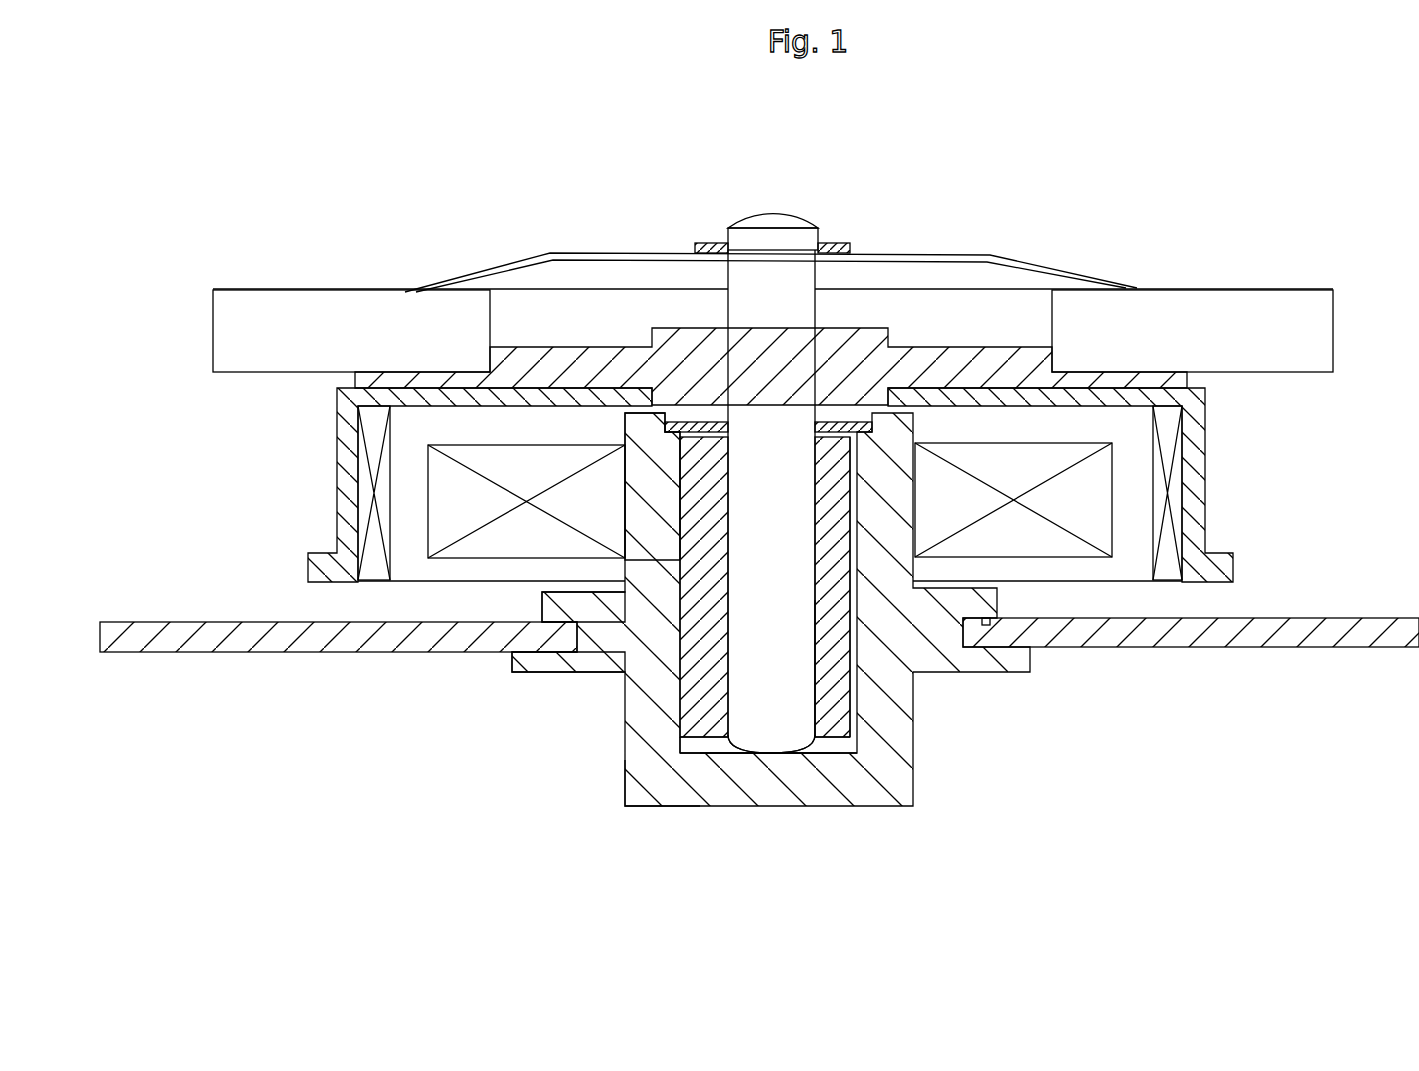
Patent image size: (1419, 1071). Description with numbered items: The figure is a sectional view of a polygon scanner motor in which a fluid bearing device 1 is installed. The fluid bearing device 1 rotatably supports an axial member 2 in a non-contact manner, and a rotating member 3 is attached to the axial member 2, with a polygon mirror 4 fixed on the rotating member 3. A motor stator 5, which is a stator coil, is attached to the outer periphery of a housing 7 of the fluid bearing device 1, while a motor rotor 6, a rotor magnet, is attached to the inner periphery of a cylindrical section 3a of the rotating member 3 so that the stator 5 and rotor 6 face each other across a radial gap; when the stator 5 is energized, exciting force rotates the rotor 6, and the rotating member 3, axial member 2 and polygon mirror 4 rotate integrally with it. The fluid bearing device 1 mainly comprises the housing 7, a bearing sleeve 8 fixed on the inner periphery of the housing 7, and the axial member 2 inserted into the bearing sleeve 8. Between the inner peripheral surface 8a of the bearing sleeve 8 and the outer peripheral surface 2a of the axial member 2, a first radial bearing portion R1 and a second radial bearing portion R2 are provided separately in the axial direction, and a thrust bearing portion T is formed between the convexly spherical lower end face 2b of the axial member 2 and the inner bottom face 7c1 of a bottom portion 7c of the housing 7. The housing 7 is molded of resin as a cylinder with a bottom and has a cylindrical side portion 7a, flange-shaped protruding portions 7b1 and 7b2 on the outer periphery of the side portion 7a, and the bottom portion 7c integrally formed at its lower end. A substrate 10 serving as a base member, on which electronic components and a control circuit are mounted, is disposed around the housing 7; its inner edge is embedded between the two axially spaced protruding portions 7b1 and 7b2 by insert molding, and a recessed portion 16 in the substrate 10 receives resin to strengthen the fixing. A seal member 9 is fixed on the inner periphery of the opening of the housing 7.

The fluid bearing device 1 is at (606, 762).
The axial member 2 is at (788, 203).
The outer peripheral surface 2a is at (727, 308).
The lower end face 2b is at (820, 752).
The rotating member 3 is at (948, 345).
The cylindrical section 3a is at (1195, 472).
The polygon mirror 4 is at (1215, 308).
The motor stator 5 is at (1047, 542).
The motor rotor 6 is at (1165, 565).
The housing 7 is at (660, 786).
The side portion 7a is at (643, 515).
The protruding portion 7b1 is at (565, 603).
The protruding portion 7b2 is at (542, 665).
The bottom portion 7c is at (768, 788).
The inner bottom face 7c1 is at (763, 744).
The bearing sleeve 8 is at (698, 656).
The inner peripheral surface 8a is at (725, 731).
The seal member 9 is at (688, 428).
The substrate 10 is at (1321, 640).
The recessed portion 16 is at (988, 627).
The first radial bearing portion R1 is at (832, 481).
The second radial bearing portion R2 is at (820, 691).
The thrust bearing portion T is at (790, 763).